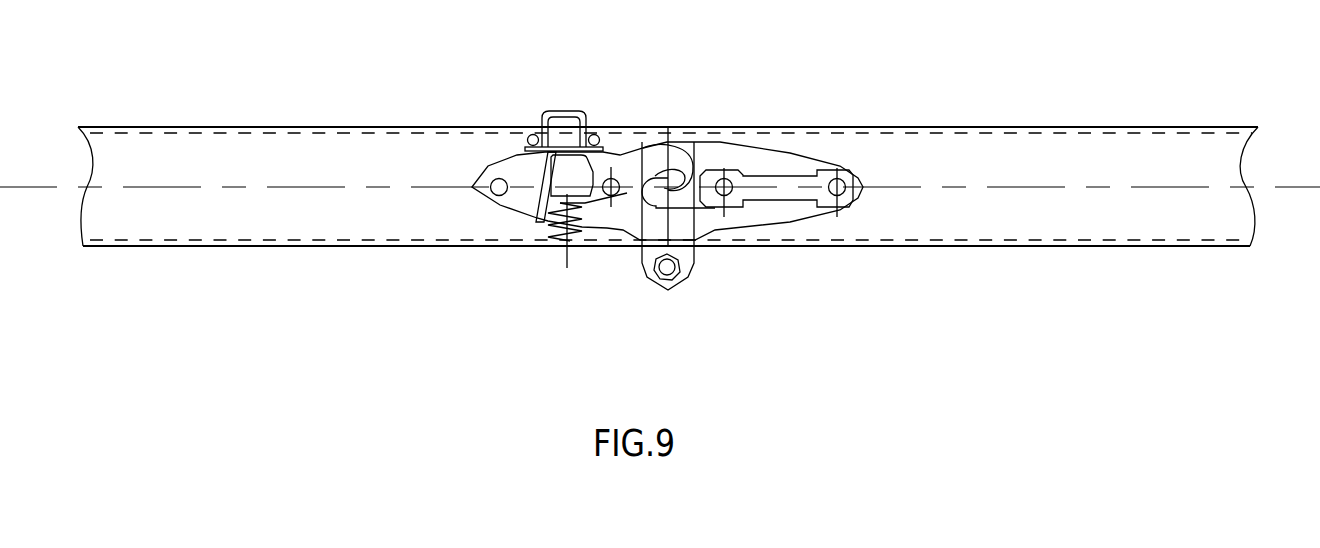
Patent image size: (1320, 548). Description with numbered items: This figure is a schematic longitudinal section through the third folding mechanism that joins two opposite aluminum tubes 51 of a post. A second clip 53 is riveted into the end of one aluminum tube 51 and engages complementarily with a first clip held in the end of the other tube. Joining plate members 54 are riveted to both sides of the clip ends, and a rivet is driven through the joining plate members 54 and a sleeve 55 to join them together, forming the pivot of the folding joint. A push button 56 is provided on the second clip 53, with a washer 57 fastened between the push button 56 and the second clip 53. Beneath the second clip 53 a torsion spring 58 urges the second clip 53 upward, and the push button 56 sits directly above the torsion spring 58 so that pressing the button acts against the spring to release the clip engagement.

The aluminum tube 51 is at (348, 130).
The second clip 53 is at (543, 198).
The joining plate member 54 is at (768, 225).
The sleeve 55 is at (682, 267).
The push button 56 is at (545, 110).
The washer 57 is at (532, 137).
The torsion spring 58 is at (575, 235).